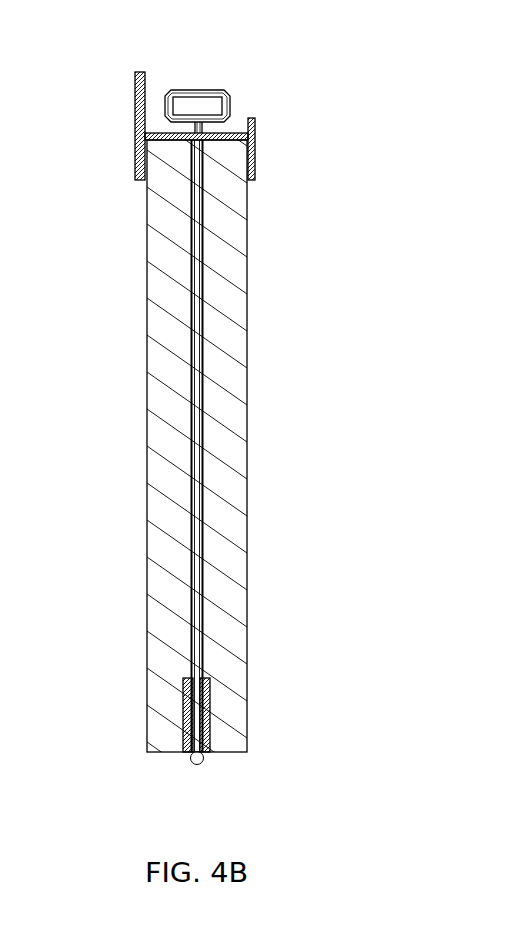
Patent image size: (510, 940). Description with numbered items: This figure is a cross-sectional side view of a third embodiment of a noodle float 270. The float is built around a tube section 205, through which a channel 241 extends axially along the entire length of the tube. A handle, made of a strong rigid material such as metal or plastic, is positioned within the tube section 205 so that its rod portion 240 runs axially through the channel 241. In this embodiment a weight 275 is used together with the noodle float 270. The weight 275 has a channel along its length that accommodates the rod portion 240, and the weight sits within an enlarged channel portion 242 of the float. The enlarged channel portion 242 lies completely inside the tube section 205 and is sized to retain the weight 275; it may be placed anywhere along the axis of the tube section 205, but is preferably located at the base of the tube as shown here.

The noodle float 270 is at (120, 442).
The tube section 205 is at (167, 543).
The rod portion 240 is at (203, 600).
The channel 241 is at (202, 638).
The enlarged channel portion 242 is at (218, 730).
The weight 275 is at (187, 693).